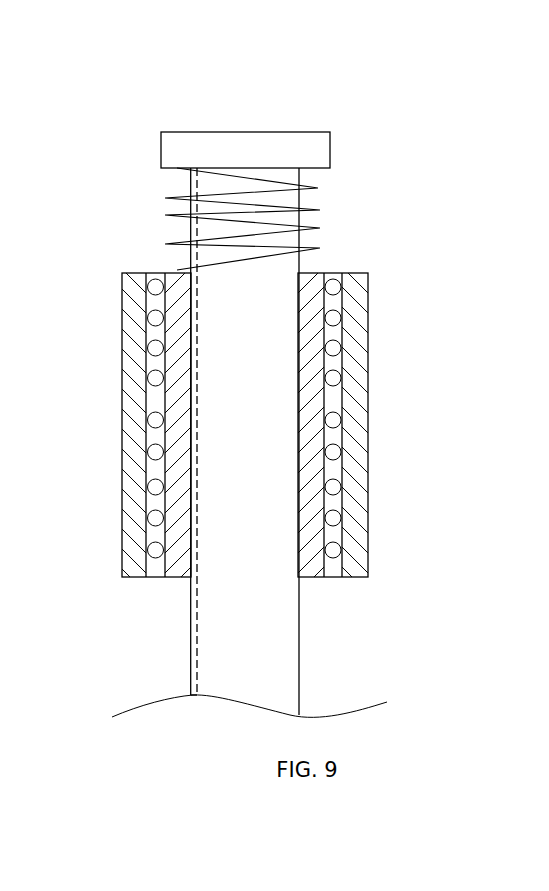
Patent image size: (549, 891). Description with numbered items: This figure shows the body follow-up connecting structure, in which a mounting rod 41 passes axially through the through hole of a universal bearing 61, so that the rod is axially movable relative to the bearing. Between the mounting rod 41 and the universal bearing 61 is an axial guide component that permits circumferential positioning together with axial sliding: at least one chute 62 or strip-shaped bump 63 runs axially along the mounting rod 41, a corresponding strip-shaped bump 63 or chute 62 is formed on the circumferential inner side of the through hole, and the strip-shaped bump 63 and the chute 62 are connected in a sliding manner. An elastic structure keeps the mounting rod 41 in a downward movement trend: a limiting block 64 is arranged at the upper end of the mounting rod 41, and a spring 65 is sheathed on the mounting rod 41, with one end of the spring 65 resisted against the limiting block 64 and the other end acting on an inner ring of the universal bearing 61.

The mounting rod 41 is at (225, 400).
The universal bearing 61 is at (343, 382).
The chute 62 is at (193, 613).
The strip-shaped bump 63 is at (193, 468).
The limiting block 64 is at (273, 153).
The spring 65 is at (307, 227).